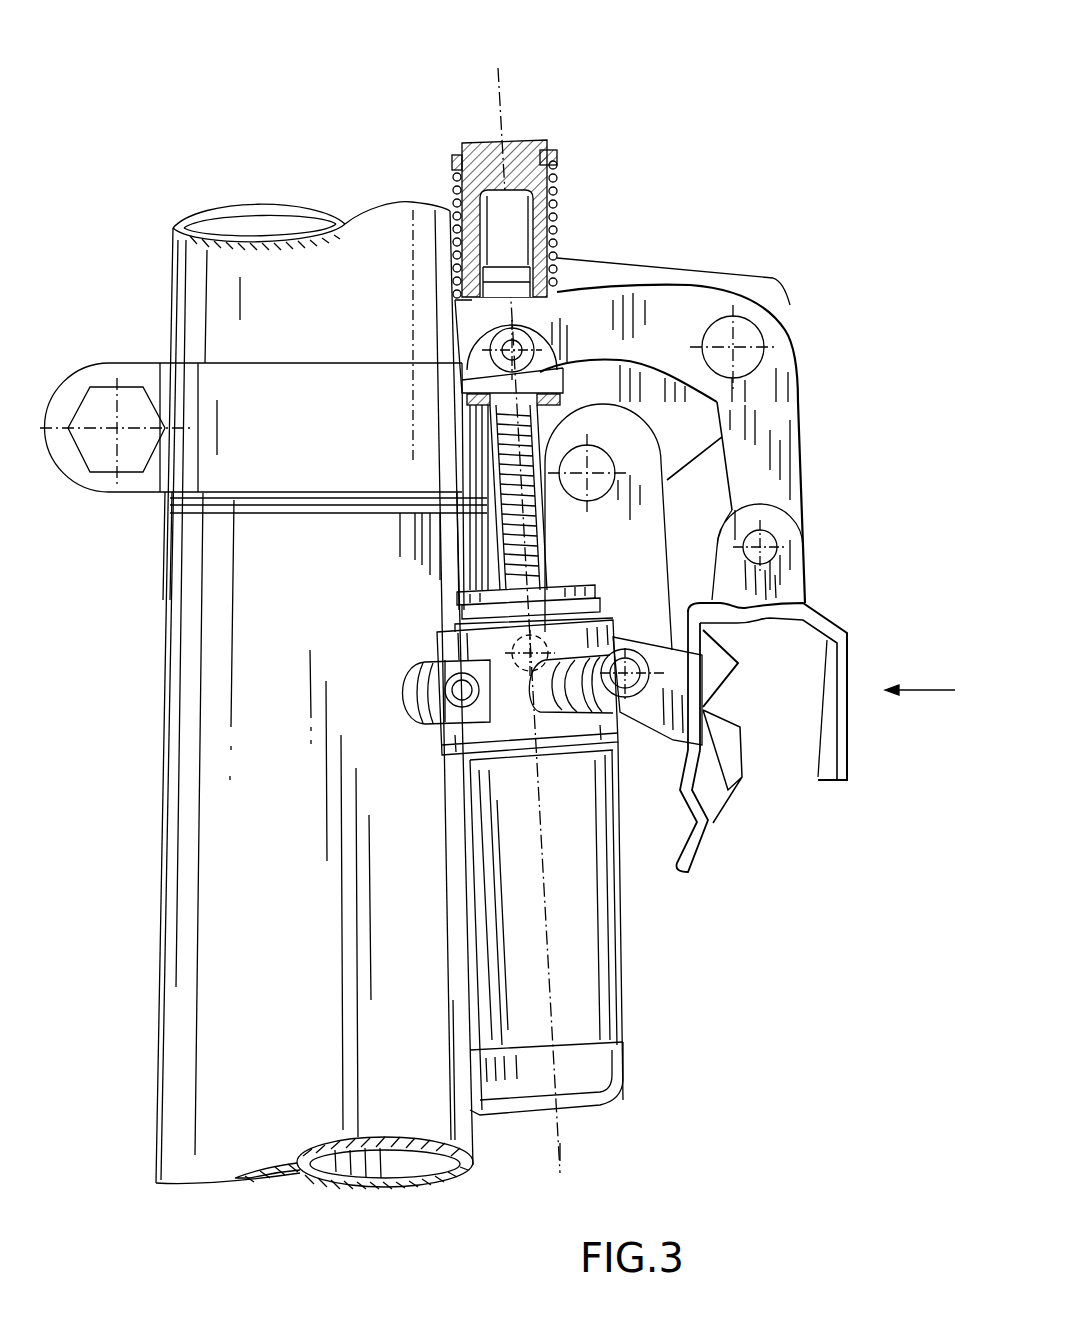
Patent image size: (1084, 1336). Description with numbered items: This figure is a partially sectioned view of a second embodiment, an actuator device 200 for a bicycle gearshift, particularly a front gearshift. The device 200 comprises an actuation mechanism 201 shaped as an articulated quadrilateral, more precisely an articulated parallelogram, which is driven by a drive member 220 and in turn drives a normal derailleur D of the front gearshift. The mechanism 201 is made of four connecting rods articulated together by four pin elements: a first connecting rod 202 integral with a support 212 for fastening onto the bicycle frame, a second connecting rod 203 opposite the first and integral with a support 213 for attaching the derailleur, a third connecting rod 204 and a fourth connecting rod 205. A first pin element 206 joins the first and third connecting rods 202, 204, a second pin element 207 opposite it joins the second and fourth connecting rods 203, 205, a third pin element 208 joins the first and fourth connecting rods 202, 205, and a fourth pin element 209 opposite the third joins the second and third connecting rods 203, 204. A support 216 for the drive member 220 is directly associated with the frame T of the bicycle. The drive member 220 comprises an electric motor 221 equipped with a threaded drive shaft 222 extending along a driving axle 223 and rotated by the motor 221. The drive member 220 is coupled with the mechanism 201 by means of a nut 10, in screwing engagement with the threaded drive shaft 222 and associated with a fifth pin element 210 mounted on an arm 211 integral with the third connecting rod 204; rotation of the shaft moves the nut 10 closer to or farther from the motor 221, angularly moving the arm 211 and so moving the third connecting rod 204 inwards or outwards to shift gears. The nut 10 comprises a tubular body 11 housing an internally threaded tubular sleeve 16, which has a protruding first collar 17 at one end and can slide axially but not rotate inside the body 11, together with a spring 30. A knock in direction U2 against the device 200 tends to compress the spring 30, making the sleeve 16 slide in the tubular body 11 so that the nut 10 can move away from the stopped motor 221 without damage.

The actuator device 200 is at (570, 98).
The nut 10 is at (582, 191).
The tubular body 11 is at (457, 310).
The tubular sleeve 16 is at (553, 172).
The first collar 17 is at (455, 158).
The spring 30 is at (455, 192).
The actuation mechanism 201 is at (835, 312).
The first connecting rod 202 is at (697, 420).
The second connecting rod 203 is at (790, 580).
The third connecting rod 204 is at (785, 448).
The fourth connecting rod 205 is at (723, 630).
The first pin element 206 is at (742, 333).
The second pin element 207 is at (643, 700).
The third pin element 208 is at (600, 484).
The fourth pin element 209 is at (765, 545).
The fifth pin element 210 is at (528, 337).
The arm 211 is at (668, 310).
The support 212 is at (205, 470).
The support 213 is at (823, 607).
The support 216 is at (523, 727).
The drive member 220 is at (645, 1062).
The electric motor 221 is at (590, 987).
The threaded drive shaft 222 is at (500, 550).
The driving axle 223 is at (560, 1152).
The frame T is at (172, 827).
The derailleur D is at (742, 774).
The direction U2 is at (920, 711).